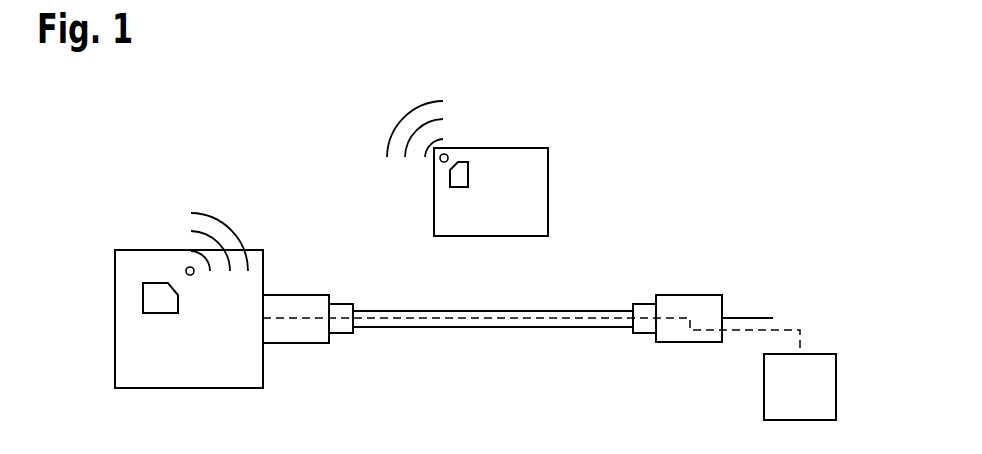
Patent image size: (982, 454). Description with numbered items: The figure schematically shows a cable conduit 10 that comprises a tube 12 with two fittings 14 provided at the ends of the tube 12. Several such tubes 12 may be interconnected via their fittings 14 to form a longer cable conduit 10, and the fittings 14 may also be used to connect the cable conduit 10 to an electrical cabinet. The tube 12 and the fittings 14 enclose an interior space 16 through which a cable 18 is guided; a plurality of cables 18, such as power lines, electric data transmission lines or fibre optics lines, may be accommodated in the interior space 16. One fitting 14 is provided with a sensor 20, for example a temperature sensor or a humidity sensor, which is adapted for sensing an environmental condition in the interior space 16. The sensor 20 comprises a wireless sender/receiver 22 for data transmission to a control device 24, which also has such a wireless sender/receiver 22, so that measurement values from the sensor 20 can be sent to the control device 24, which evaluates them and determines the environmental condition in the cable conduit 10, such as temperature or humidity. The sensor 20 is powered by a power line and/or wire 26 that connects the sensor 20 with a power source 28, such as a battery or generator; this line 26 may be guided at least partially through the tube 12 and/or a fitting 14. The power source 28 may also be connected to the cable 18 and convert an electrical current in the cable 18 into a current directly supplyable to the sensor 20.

The cable conduit 10 is at (103, 188).
The tube 12 is at (597, 310).
The fitting 14 is at (295, 343).
The interior space 16 is at (383, 317).
The cable 18 is at (747, 318).
The sensor 20 is at (115, 348).
The wireless sender/receiver 22 is at (157, 283).
The control device 24 is at (516, 148).
The power line and/or wire 26 is at (797, 330).
The power source 28 is at (836, 388).